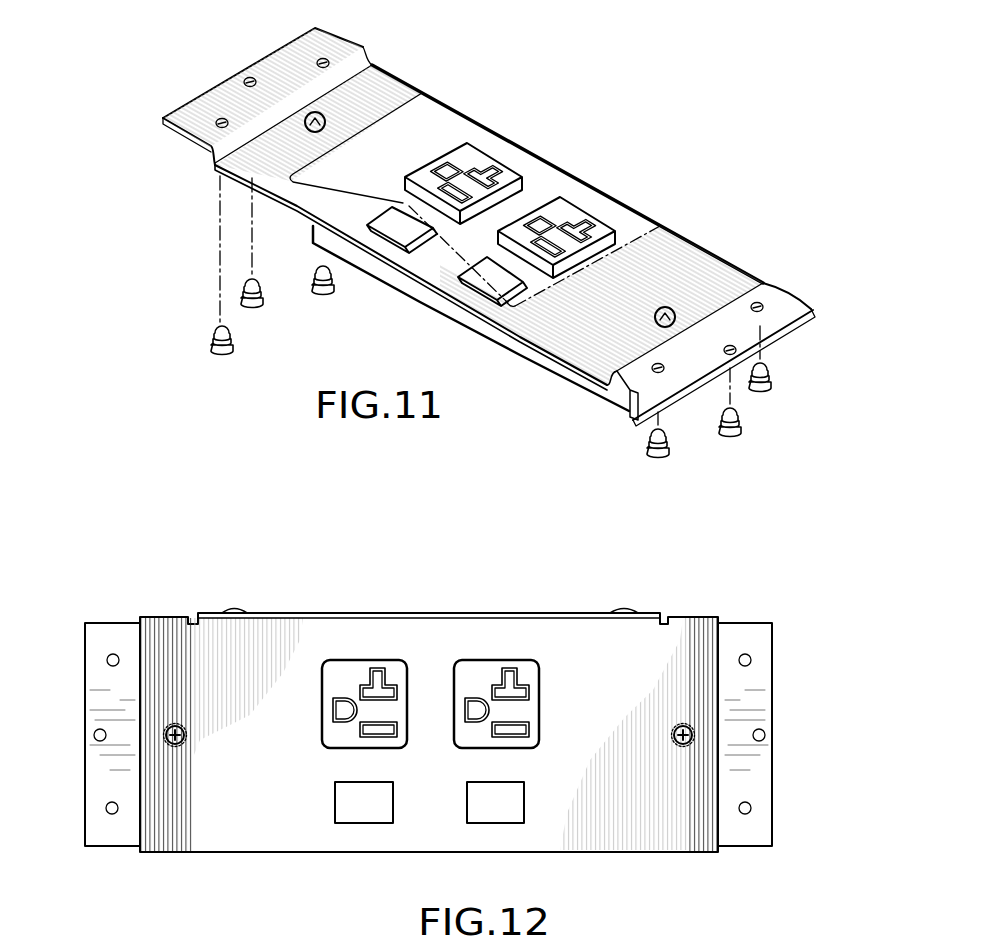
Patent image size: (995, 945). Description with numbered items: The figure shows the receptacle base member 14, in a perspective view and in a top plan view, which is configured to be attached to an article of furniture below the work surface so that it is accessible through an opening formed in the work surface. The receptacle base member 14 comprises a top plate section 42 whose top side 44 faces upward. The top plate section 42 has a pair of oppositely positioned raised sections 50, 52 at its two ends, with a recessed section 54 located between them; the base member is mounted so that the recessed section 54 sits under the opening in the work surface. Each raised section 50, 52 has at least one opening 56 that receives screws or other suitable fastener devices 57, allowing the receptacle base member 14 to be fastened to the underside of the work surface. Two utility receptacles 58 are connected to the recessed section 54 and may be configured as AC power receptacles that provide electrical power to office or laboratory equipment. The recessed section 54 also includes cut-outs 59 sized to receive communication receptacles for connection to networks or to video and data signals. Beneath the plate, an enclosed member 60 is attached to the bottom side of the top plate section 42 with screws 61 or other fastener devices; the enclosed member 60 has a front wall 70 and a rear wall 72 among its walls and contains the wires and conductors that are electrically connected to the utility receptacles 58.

In FIG. 11, the receptacle base member 14 is at (513, 126).
In FIG. 12, the receptacle base member 14 is at (280, 571).
In FIG. 11, the top plate section 42 is at (550, 183).
In FIG. 12, the top plate section 42 is at (663, 655).
In FIG. 11, the top side 44 is at (423, 127).
In FIG. 12, the top side 44 is at (487, 635).
In FIG. 11, the raised section 50 is at (341, 48).
In FIG. 12, the raised section 50 is at (107, 849).
In FIG. 11, the raised section 52 is at (790, 315).
In FIG. 12, the raised section 52 is at (745, 849).
In FIG. 11, the recessed section 54 is at (668, 245).
In FIG. 12, the recessed section 54 is at (268, 832).
In FIG. 11, the opening 56 is at (320, 60).
In FIG. 12, the opening 56 is at (110, 655).
In FIG. 11, the fastener devices 57 is at (318, 292).
In FIG. 11, the utility receptacle 58 is at (488, 168).
In FIG. 12, the utility receptacle 58 is at (321, 705).
In FIG. 11, the cut-outs 59 is at (473, 280).
In FIG. 12, the cut-outs 59 is at (480, 805).
In FIG. 11, the enclosed member 60 is at (510, 357).
In FIG. 11, the screws 61 is at (680, 312).
In FIG. 12, the screws 61 is at (180, 747).
In FIG. 11, the front wall 70 is at (448, 310).
In FIG. 12, the rear wall 72 is at (433, 617).